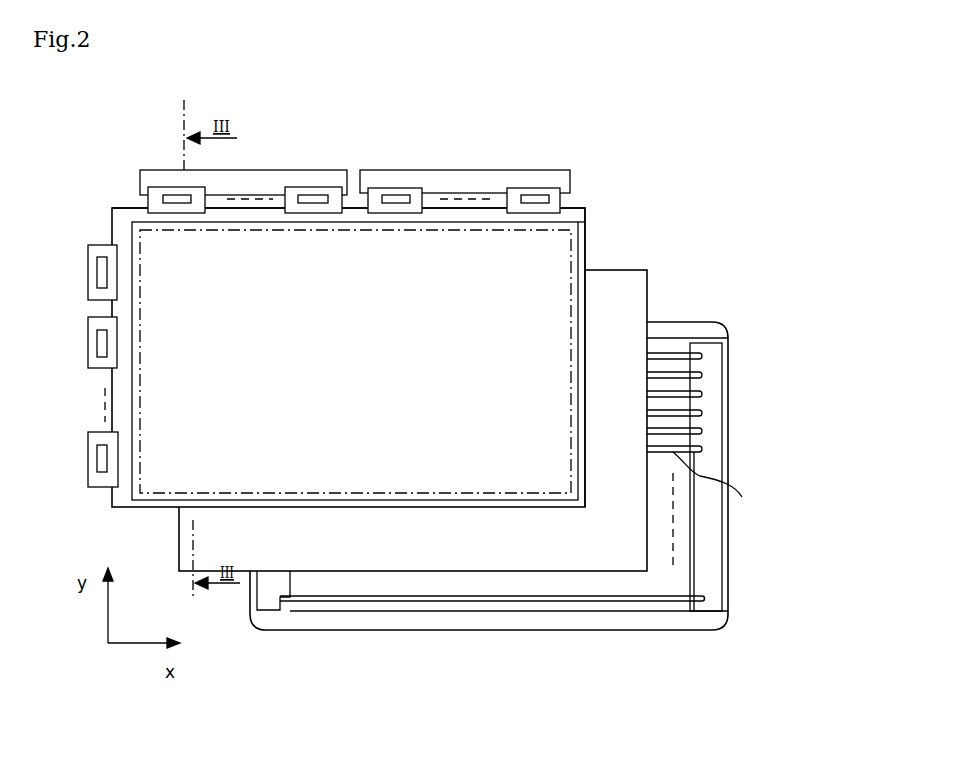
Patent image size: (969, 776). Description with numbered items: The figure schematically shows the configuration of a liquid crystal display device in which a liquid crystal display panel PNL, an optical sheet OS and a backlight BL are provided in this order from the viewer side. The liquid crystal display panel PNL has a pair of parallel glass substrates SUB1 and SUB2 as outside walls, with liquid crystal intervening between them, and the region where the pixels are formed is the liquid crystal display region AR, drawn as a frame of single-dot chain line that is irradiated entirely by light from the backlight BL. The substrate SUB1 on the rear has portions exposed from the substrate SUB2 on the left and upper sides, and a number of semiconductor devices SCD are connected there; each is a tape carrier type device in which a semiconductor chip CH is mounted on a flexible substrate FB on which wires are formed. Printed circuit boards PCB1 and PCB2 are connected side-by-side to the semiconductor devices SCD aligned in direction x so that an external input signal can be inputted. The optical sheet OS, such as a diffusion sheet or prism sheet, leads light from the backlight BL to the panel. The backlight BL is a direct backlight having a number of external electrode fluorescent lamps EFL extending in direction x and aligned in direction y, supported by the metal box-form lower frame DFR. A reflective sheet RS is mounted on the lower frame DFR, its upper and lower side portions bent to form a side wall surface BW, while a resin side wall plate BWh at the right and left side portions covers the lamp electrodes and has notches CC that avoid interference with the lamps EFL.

The substrate SUB1 is at (120, 208).
The substrate SUB2 is at (137, 492).
The semiconductor device SCD is at (167, 188).
The printed circuit board PCB1 is at (317, 170).
The printed circuit board PCB2 is at (455, 170).
The liquid crystal display panel PNL is at (501, 143).
The semiconductor chip CH is at (530, 196).
The flexible substrate FB is at (556, 202).
The optical sheet OS is at (601, 223).
The side wall surface BW is at (675, 330).
The backlight BL is at (703, 297).
The notch CC is at (699, 402).
The side wall plate BWh is at (705, 458).
The external electrode fluorescent lamp EFL is at (340, 677).
The liquid crystal display region AR is at (355, 361).
The reflective sheet RS is at (458, 585).
The lower frame DFR is at (558, 632).